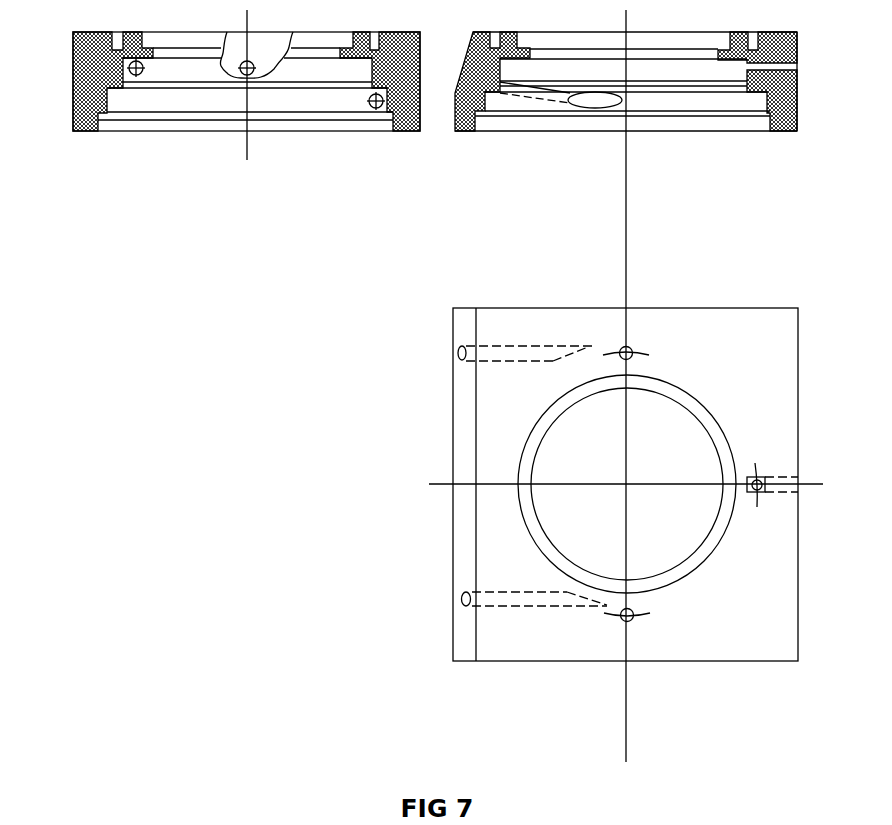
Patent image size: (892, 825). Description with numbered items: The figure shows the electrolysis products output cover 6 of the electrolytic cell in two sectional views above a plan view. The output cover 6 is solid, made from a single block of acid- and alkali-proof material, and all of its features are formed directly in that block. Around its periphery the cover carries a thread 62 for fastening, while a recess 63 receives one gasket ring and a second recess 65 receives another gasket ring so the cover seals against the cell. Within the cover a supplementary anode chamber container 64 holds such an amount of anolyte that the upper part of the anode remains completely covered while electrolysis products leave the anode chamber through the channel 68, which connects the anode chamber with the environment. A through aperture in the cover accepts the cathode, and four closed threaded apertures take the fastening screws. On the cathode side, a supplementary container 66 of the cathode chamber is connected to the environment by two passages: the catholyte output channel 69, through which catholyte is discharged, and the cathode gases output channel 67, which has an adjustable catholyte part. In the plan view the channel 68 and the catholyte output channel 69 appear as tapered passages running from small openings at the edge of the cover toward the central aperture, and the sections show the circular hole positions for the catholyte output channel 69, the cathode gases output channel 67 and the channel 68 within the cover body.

The electrolysis products output cover 6 is at (83, 130).
The thread 62 is at (771, 128).
The recess for the gasket ring 63 is at (478, 117).
The supplementary anode chamber container 64 is at (766, 94).
The recess for the gasket ring 65 is at (746, 82).
The supplementary container of the cathode chamber 66 is at (747, 61).
The cathode gases output channel 67 is at (251, 74).
The channel 68 is at (379, 107).
The catholyte output channel 69 is at (139, 72).